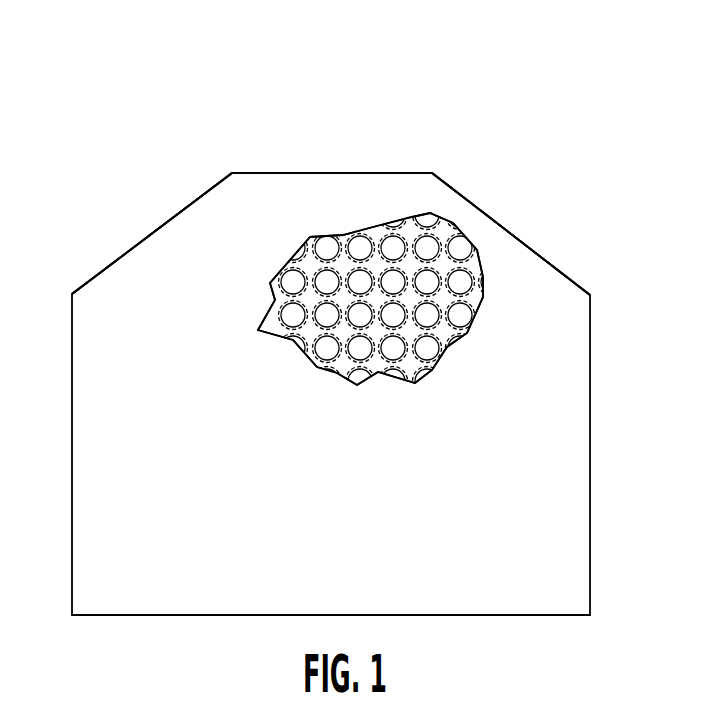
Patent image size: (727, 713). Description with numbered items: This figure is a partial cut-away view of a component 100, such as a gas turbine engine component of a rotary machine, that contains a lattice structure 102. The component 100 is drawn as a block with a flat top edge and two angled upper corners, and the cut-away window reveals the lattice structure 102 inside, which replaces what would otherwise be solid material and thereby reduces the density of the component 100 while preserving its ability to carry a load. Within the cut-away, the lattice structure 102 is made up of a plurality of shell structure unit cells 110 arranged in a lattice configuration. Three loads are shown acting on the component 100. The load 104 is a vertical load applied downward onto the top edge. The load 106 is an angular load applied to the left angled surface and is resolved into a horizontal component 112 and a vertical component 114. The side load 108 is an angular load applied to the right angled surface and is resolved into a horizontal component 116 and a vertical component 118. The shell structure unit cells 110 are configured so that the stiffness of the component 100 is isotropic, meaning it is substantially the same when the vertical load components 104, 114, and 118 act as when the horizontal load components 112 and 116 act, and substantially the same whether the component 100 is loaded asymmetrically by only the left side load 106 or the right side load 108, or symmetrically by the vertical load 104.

The component 100 is at (206, 56).
The lattice structure 102 is at (432, 211).
The load 104 is at (336, 156).
The load 106 is at (152, 207).
The side load 108 is at (526, 216).
The shell structure unit cells 110 is at (457, 342).
The horizontal component 112 is at (145, 225).
The vertical component 114 is at (173, 200).
The horizontal component 116 is at (534, 234).
The vertical component 118 is at (505, 209).